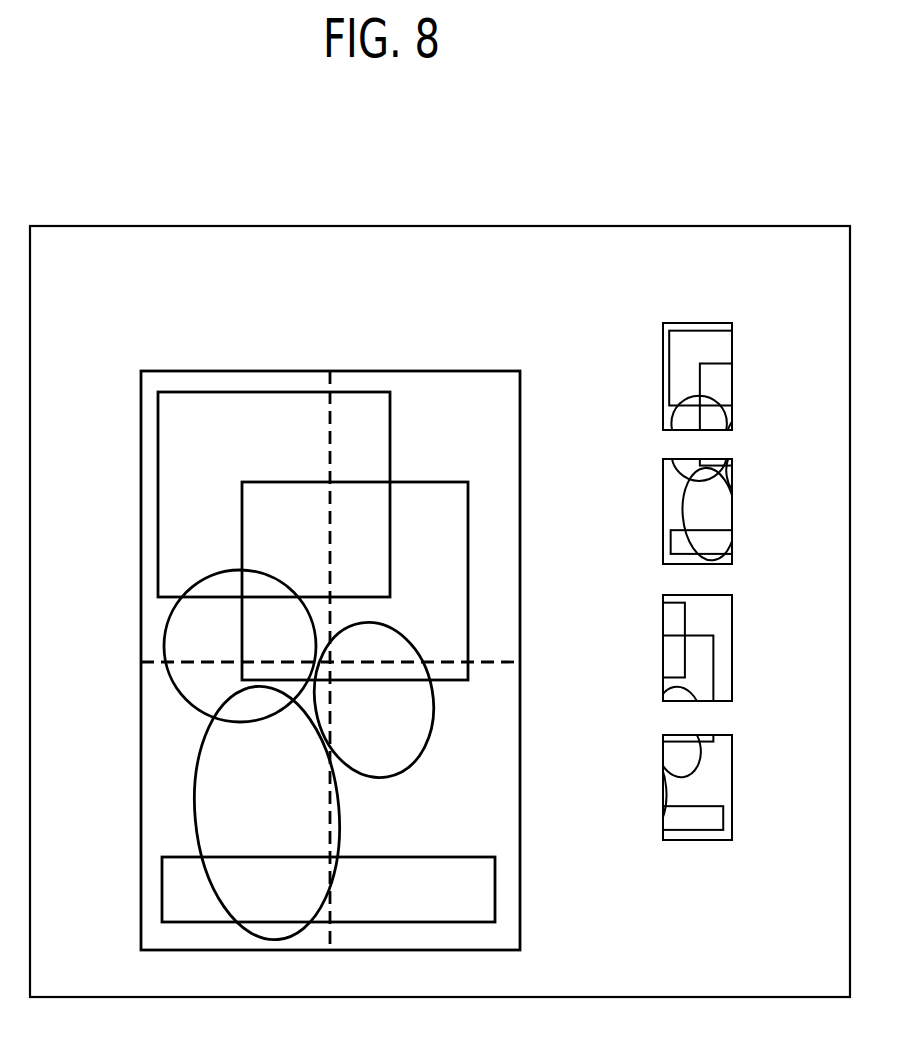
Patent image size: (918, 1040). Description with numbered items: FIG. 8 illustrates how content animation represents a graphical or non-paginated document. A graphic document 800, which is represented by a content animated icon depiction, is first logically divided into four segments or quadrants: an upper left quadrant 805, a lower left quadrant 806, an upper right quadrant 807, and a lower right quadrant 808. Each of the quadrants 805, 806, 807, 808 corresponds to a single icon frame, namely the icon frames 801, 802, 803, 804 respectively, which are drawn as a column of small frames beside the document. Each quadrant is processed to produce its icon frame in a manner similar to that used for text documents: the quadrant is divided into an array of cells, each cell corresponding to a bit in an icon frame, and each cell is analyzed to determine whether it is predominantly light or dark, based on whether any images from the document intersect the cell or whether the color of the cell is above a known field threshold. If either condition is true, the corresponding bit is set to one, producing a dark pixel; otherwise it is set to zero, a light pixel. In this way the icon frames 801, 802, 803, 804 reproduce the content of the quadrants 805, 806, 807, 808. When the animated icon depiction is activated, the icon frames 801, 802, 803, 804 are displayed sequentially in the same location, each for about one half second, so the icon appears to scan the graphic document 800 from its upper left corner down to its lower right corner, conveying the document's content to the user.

The graphic document 800 is at (383, 370).
The icon frame 801 is at (742, 344).
The icon frame 802 is at (742, 483).
The icon frame 803 is at (742, 620).
The icon frame 804 is at (742, 755).
The upper left quadrant 805 is at (168, 441).
The lower left quadrant 806 is at (160, 767).
The upper right quadrant 807 is at (507, 434).
The lower right quadrant 808 is at (500, 835).